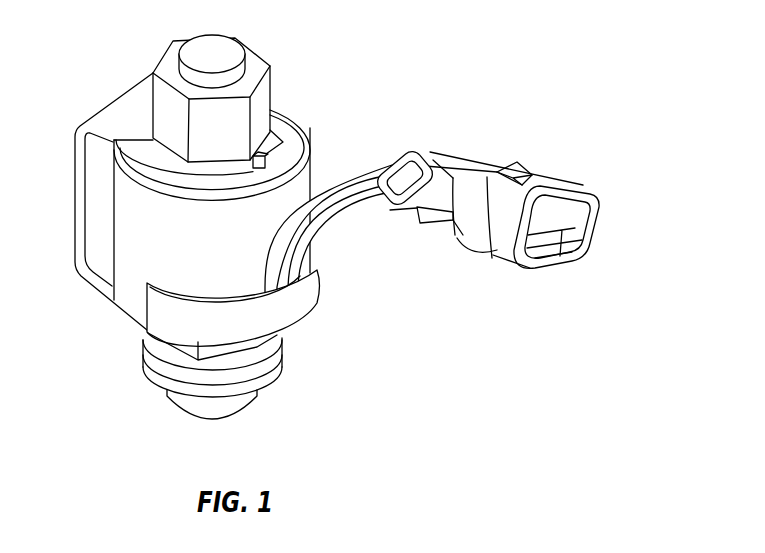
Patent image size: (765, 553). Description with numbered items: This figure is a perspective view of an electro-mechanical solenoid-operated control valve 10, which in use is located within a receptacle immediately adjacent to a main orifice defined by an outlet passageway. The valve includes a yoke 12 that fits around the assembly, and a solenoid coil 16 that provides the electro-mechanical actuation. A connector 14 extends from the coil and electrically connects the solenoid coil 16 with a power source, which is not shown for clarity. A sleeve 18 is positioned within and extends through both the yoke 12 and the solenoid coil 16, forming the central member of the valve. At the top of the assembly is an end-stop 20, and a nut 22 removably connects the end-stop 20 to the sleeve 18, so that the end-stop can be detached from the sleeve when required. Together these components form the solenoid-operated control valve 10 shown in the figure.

The solenoid-operated control valve 10 is at (417, 37).
The yoke 12 is at (112, 103).
The connector 14 is at (562, 176).
The solenoid coil 16 is at (128, 311).
The sleeve 18 is at (298, 369).
The end-stop 20 is at (232, 35).
The nut 22 is at (273, 83).